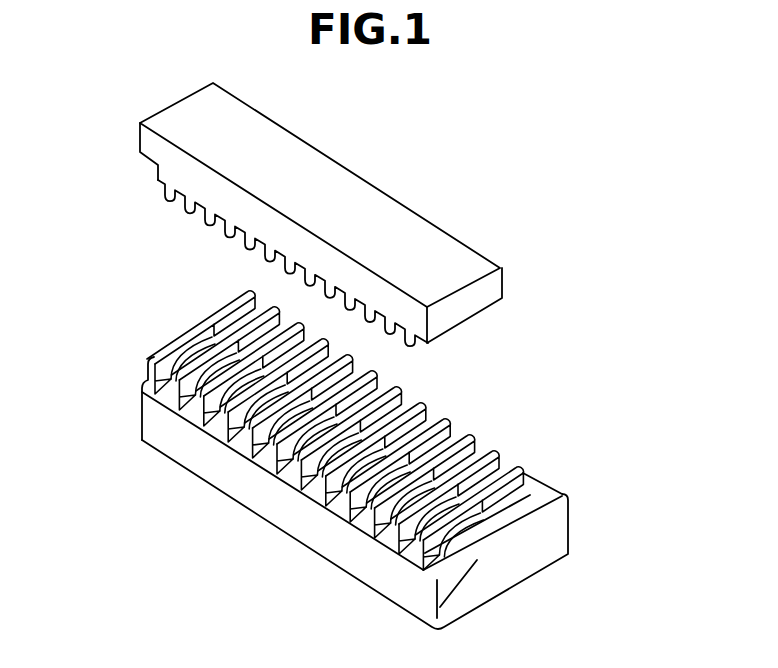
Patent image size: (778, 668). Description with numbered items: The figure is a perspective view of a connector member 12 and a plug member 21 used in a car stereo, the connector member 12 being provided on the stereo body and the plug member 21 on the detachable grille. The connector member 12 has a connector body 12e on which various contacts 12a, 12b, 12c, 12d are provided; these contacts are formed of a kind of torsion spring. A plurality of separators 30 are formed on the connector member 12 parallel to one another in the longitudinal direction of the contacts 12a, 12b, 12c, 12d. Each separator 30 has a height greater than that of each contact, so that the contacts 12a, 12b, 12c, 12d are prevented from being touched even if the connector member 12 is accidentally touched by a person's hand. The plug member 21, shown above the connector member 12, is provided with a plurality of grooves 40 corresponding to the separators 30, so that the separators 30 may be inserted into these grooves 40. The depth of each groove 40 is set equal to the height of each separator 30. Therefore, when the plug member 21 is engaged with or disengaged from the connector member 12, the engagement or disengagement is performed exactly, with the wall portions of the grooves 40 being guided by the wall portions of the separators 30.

The connector member 12 is at (572, 516).
The contact 12a is at (525, 468).
The contact 12b is at (495, 462).
The contact 12c is at (226, 333).
The contact 12d is at (264, 344).
The connector body 12e is at (537, 566).
The plug member 21 is at (437, 243).
The separator 30 is at (222, 415).
The groove 40 is at (196, 206).